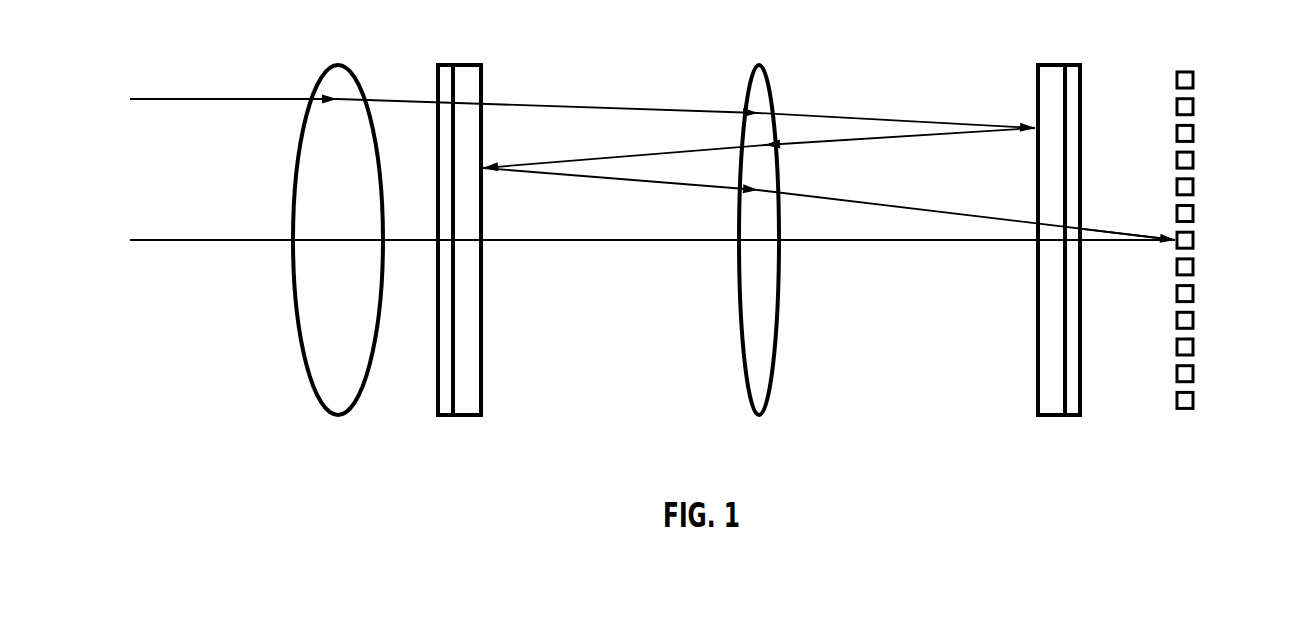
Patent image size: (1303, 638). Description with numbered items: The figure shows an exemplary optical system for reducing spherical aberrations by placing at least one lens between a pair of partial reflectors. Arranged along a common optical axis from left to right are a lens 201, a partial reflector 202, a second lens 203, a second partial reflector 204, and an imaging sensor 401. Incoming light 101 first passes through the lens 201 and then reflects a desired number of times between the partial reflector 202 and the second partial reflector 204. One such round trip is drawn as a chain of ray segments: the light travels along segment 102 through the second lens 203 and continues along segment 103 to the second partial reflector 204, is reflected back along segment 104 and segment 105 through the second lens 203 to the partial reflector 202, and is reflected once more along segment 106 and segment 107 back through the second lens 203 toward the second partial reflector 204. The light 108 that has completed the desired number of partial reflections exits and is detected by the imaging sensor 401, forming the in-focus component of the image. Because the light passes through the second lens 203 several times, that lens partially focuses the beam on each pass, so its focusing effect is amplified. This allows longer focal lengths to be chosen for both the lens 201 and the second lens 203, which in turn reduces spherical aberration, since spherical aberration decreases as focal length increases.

The incoming light 101 is at (253, 97).
The light path segment 102 is at (635, 105).
The light path segment 103 is at (905, 118).
The light path segment 104 is at (932, 137).
The light path segment 105 is at (645, 152).
The light path segment 106 is at (640, 193).
The light path segment 107 is at (1018, 220).
The light 108 is at (1105, 237).
The lens 201 is at (302, 358).
The partial reflector 202 is at (482, 375).
The second lens 203 is at (742, 360).
The second partial reflector 204 is at (1038, 385).
The imaging sensor 401 is at (1193, 375).